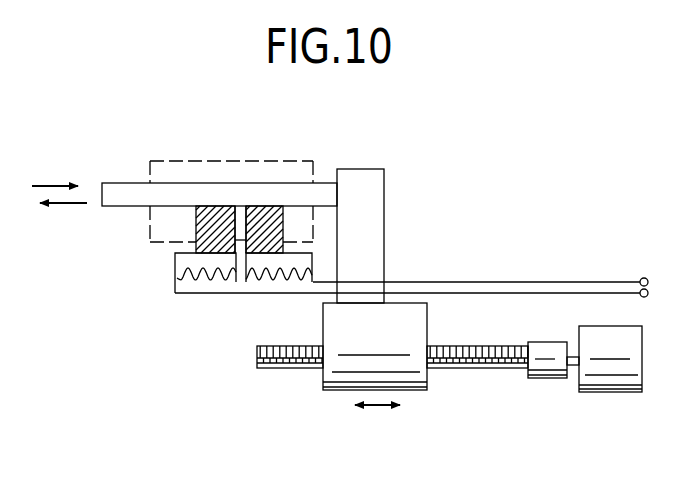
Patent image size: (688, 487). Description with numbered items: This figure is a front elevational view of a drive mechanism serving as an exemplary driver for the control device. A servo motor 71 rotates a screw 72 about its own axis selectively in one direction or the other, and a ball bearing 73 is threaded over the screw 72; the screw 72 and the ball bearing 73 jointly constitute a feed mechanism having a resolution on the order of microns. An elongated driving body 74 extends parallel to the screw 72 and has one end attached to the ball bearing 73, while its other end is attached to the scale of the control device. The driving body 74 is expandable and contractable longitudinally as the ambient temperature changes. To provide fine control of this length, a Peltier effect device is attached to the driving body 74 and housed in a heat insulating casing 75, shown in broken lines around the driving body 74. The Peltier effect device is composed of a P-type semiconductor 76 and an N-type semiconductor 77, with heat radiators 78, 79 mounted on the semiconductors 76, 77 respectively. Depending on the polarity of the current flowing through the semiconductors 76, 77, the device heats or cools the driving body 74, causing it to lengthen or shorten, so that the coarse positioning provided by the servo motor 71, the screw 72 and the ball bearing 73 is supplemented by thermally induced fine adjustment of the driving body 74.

The servo motor 71 is at (610, 378).
The screw 72 is at (441, 347).
The ball bearing 73 is at (428, 385).
The driving body 74 is at (245, 197).
The heat insulating casing 75 is at (215, 161).
The P-type semiconductor 76 is at (281, 220).
The N-type semiconductor 77 is at (195, 215).
The heat radiator 78 is at (300, 265).
The heat radiator 79 is at (180, 267).